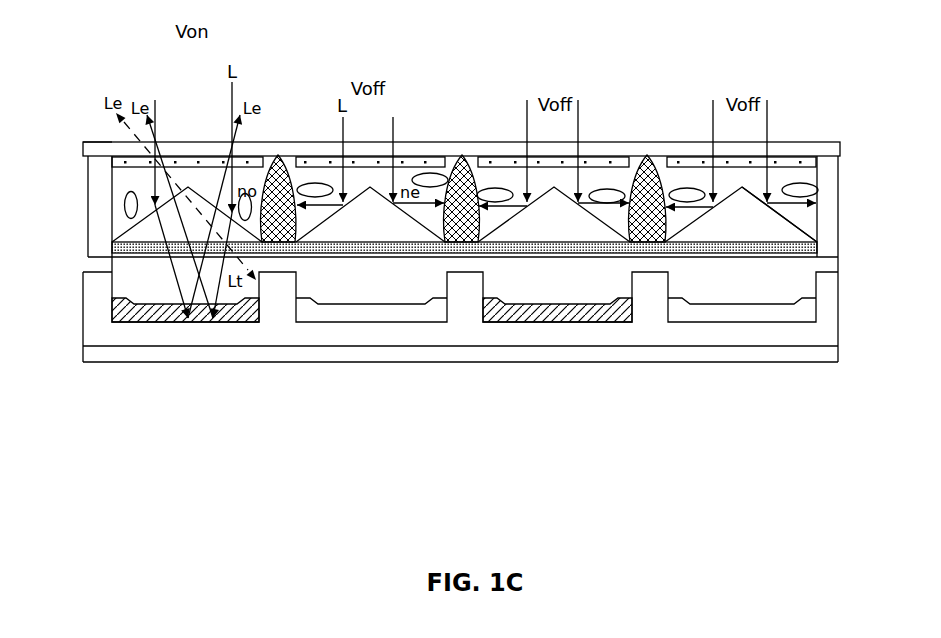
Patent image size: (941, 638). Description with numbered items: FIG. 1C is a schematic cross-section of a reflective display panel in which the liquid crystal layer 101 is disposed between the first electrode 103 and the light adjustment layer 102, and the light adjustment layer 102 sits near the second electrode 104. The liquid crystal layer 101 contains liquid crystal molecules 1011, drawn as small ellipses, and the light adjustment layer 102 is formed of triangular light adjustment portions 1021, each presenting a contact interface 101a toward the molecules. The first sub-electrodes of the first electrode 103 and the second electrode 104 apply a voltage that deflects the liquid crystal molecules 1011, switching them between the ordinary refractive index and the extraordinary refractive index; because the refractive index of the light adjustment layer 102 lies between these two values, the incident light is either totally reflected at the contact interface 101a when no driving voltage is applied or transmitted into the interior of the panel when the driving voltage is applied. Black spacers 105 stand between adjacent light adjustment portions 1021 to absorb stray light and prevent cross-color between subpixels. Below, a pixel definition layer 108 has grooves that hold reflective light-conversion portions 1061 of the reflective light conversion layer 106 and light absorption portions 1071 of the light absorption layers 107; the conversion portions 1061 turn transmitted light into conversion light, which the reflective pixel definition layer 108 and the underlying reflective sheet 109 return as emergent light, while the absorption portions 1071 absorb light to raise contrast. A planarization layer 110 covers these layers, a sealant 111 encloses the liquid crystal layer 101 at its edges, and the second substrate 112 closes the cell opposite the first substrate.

The liquid crystal layer 101 is at (425, 202).
The liquid crystal molecules 1011 is at (123, 205).
The light adjustment layer 102 is at (415, 225).
The light adjustment portions 1021 is at (115, 236).
The first electrode 103 is at (840, 146).
The second electrode 104 is at (800, 245).
The spacers 105 is at (647, 155).
The reflective light conversion layer 106 is at (372, 364).
The reflective light-conversion portions 1061 is at (140, 322).
The light absorption layers 107 is at (742, 364).
The light absorption portions 1071 is at (742, 310).
The pixel definition layer 108 is at (822, 300).
The reflective sheet 109 is at (823, 350).
The planarization layer 110 is at (93, 265).
The sealant 111 is at (825, 184).
The second substrate 112 is at (110, 148).
The contact interface 101a is at (815, 230).